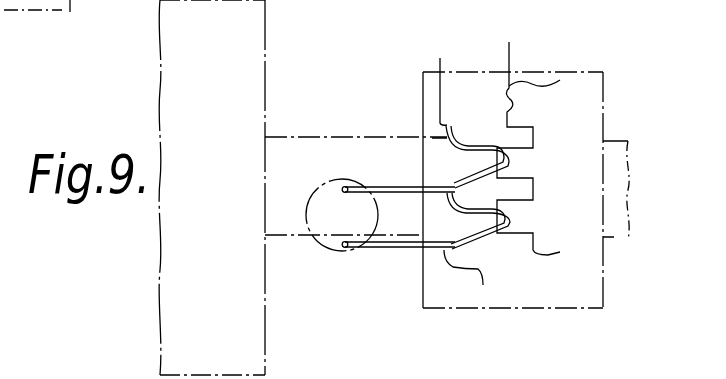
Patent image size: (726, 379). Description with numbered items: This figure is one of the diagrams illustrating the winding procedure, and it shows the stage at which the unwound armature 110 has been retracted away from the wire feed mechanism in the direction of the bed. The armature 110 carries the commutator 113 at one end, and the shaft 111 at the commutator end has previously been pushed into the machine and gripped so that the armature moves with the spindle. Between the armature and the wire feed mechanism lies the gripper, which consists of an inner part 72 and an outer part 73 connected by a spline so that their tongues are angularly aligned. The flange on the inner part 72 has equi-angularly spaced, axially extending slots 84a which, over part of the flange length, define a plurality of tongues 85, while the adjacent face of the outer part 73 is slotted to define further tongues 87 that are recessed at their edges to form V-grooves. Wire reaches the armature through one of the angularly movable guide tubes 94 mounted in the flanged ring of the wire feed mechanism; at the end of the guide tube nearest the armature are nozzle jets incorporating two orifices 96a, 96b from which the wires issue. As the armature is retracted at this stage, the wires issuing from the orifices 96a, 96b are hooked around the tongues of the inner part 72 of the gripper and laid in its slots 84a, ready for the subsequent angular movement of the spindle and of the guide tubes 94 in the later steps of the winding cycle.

The unwound armature 110 is at (230, 37).
The inner part of the gripper 72 is at (445, 80).
The tongues 87 is at (528, 130).
The commutator 113 is at (578, 72).
The orifice 96b is at (344, 185).
The slots 84a is at (432, 186).
The tongues 85 is at (486, 162).
The guide tubes 94 is at (313, 250).
The orifice 96a is at (339, 252).
The outer part of the gripper 73 is at (543, 245).
The shaft 111 is at (618, 243).